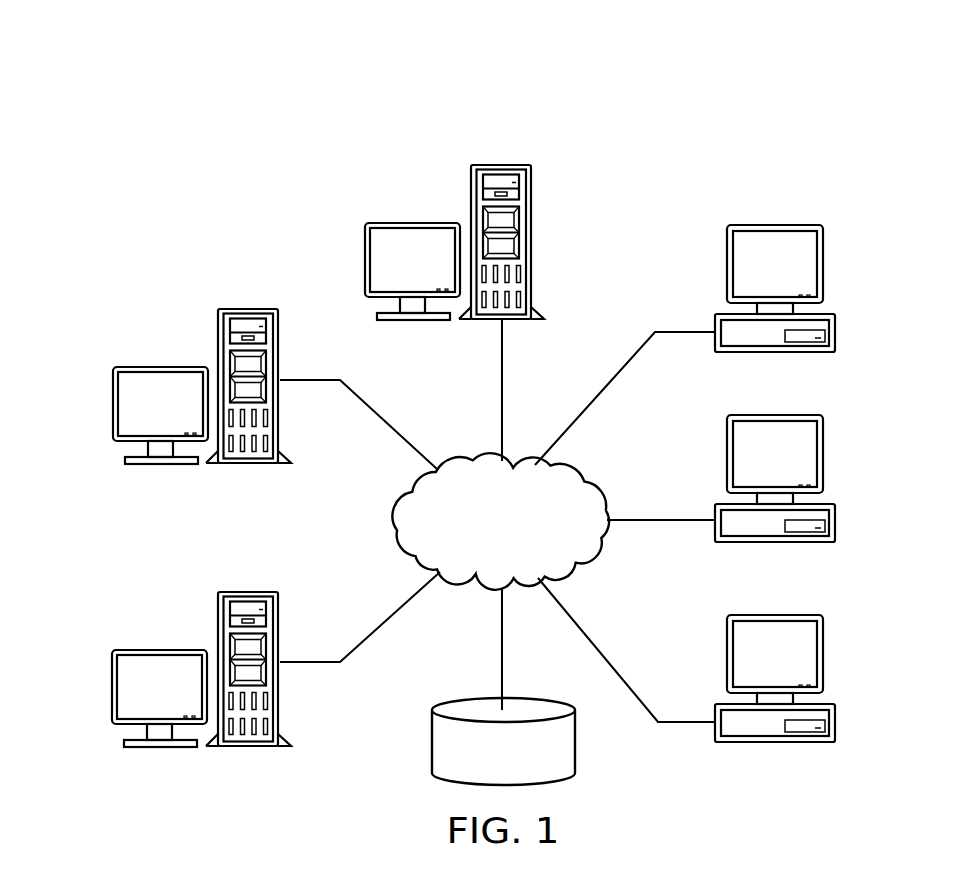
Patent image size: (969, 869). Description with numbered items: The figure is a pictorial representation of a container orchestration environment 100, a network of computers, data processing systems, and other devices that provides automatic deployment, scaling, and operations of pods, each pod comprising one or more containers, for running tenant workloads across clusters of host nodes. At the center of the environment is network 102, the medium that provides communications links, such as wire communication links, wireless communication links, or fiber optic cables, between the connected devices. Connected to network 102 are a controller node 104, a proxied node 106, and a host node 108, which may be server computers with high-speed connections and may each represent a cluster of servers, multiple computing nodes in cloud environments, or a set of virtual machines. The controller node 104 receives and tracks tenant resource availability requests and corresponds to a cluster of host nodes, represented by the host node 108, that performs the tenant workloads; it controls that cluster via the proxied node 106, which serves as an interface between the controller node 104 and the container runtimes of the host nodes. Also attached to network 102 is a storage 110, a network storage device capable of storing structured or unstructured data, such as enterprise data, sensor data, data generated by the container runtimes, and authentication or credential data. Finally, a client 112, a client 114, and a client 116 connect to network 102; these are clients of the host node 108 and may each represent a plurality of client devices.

The container orchestration environment 100 is at (280, 153).
The network 102 is at (468, 583).
The controller node 104 is at (112, 686).
The proxied node 106 is at (112, 400).
The host node 108 is at (533, 238).
The storage 110 is at (432, 740).
The client 112 is at (835, 322).
The client 114 is at (835, 512).
The client 116 is at (835, 730).